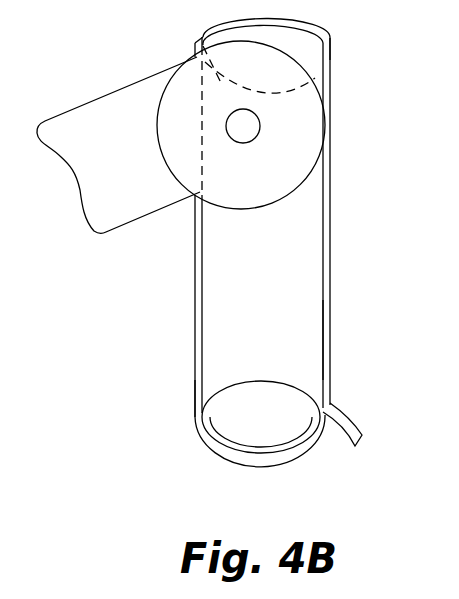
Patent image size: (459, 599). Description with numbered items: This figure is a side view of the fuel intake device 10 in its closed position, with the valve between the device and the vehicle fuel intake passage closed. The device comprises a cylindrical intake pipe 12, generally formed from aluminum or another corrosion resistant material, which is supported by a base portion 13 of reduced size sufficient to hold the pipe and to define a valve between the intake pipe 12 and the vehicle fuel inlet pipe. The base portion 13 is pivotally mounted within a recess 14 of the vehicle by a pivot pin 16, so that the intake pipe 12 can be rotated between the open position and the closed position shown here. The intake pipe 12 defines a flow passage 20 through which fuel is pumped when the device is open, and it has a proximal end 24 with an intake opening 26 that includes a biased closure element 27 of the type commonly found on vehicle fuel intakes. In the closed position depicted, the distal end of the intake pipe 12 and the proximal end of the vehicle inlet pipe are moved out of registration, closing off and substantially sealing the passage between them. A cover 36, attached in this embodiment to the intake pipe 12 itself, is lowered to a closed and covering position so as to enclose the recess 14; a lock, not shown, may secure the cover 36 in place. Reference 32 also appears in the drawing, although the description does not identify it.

The fuel intake device 10 is at (148, 245).
The intake pipe 12 is at (198, 353).
The base portion 13 is at (302, 163).
The recess 14 is at (195, 392).
The pivot pin 16 is at (261, 123).
The flow passage 20 is at (305, 330).
The proximal end 24 is at (186, 82).
The intake opening 26 is at (265, 432).
The biased closure element 27 is at (305, 365).
The rim 32 is at (325, 50).
The cover 36 is at (337, 407).